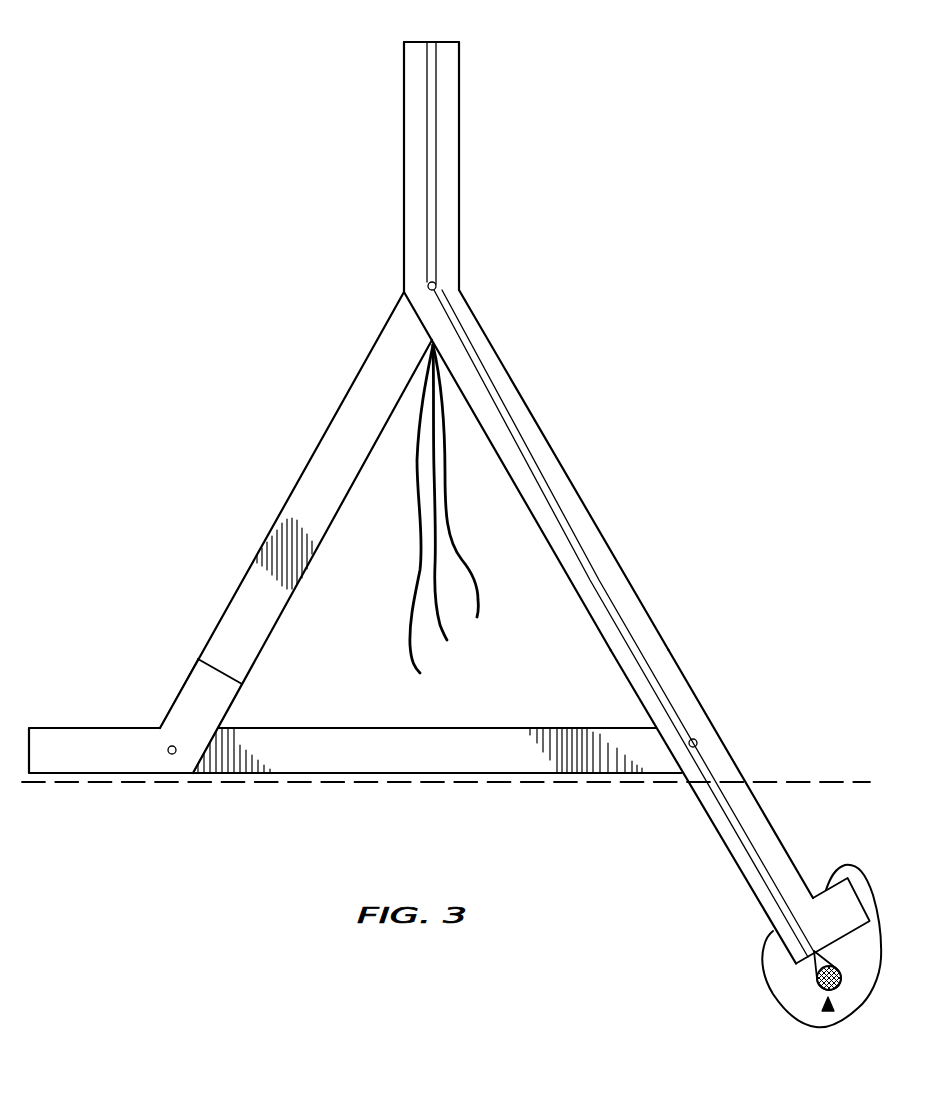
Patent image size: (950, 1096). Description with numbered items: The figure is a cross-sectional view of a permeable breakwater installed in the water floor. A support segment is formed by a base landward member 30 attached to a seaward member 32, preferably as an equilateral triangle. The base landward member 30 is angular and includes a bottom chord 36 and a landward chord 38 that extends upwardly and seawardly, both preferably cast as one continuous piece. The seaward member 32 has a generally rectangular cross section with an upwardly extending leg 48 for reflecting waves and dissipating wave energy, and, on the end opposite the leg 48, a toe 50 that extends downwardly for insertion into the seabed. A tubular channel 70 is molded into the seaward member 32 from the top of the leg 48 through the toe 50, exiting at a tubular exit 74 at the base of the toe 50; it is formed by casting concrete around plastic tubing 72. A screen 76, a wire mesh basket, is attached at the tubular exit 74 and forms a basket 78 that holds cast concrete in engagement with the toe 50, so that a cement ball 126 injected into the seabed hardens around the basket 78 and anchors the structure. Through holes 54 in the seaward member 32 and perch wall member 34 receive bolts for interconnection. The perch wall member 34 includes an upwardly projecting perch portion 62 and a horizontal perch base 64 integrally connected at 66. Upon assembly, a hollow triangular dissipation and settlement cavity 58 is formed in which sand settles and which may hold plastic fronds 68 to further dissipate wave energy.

The base landward member 30 is at (450, 753).
The seaward member 32 is at (548, 443).
The perch wall member 34 is at (177, 718).
The bottom chord 36 is at (497, 737).
The landward chord 38 is at (332, 452).
The leg 48 is at (460, 112).
The toe 50 is at (782, 843).
The through hole 54 is at (437, 285).
The dissipation and settlement cavity 58 is at (346, 630).
The perch portion 62 is at (195, 670).
The perch base 64 is at (80, 730).
The perch connection 66 is at (218, 728).
The fronds 68 is at (472, 579).
The tubular channel 70 is at (573, 533).
The plastic tubing 72 is at (431, 42).
The tubular exit 74 is at (812, 952).
The screen 76 is at (817, 990).
The basket 78 is at (827, 1008).
The cement ball 126 is at (857, 875).